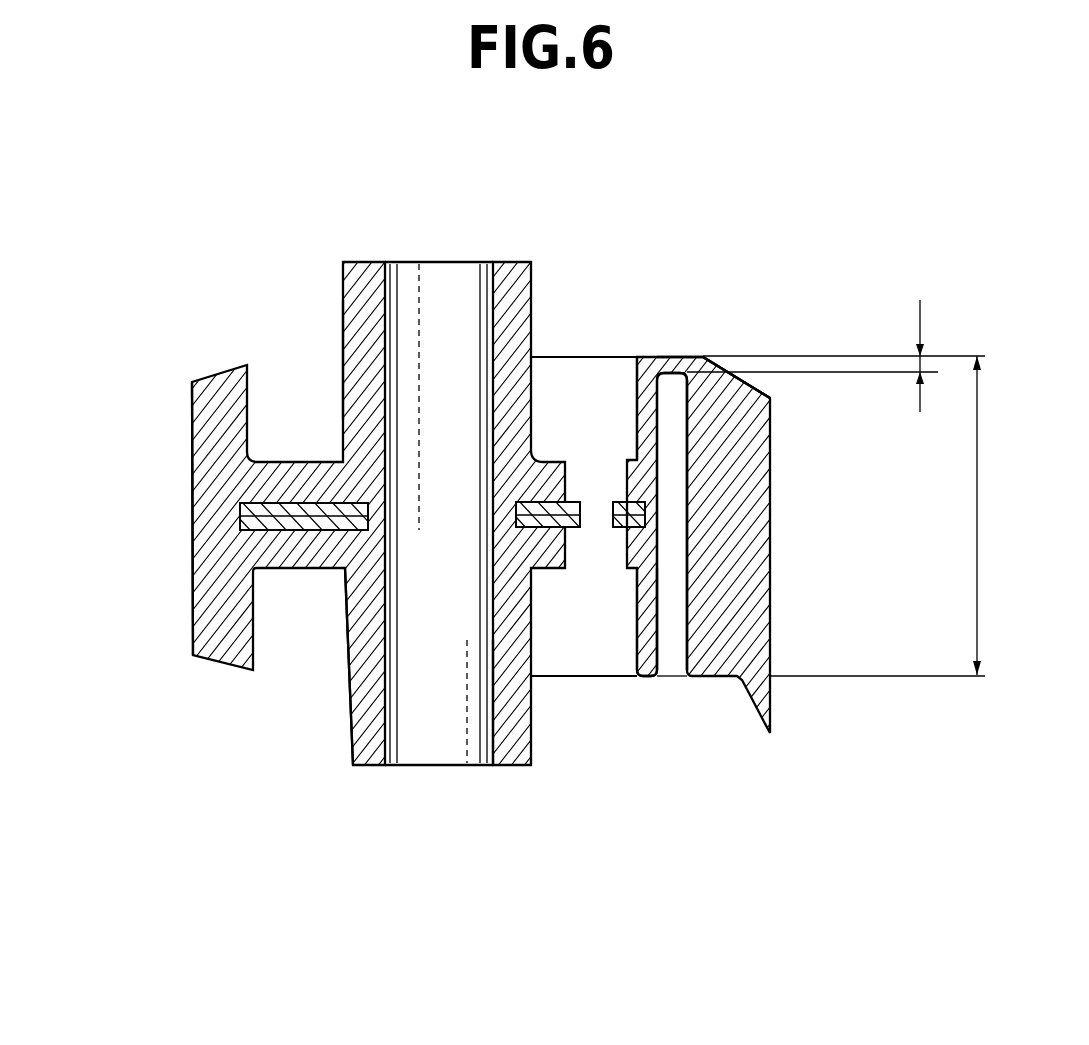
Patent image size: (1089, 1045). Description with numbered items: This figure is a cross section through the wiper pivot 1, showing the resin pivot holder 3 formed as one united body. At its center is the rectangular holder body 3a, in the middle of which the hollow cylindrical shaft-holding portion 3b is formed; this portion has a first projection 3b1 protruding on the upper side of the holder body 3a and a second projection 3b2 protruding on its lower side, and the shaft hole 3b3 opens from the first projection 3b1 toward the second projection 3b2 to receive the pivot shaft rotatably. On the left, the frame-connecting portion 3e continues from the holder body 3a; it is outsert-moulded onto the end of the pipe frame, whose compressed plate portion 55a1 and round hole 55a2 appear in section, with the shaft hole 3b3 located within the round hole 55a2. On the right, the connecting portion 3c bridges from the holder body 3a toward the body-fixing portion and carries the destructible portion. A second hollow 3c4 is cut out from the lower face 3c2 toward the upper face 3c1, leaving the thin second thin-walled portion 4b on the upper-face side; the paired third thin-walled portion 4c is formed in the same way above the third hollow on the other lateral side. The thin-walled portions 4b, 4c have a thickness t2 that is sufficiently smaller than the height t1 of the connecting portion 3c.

The wiper pivot 1 is at (504, 498).
The pivot holder 3 is at (504, 533).
The holder body 3a is at (563, 680).
The shaft-holding portion 3b is at (341, 559).
The first projection 3b1 is at (360, 352).
The second projection 3b2 is at (355, 737).
The shaft hole 3b3 is at (495, 740).
The connecting portion 3c is at (740, 502).
The upper face 3c1 is at (650, 357).
The lower face 3c2 is at (643, 677).
The second hollow 3c4 is at (774, 477).
The frame-connecting portion 3e is at (217, 520).
The second thin-walled portion 4b is at (740, 307).
The third thin-walled portion 4c is at (736, 377).
The plate portion 55a1 is at (318, 527).
The round hole 55a2 is at (508, 523).
The height of the connecting portion t1 is at (977, 523).
The thickness of the thin-walled portion t2 is at (920, 360).